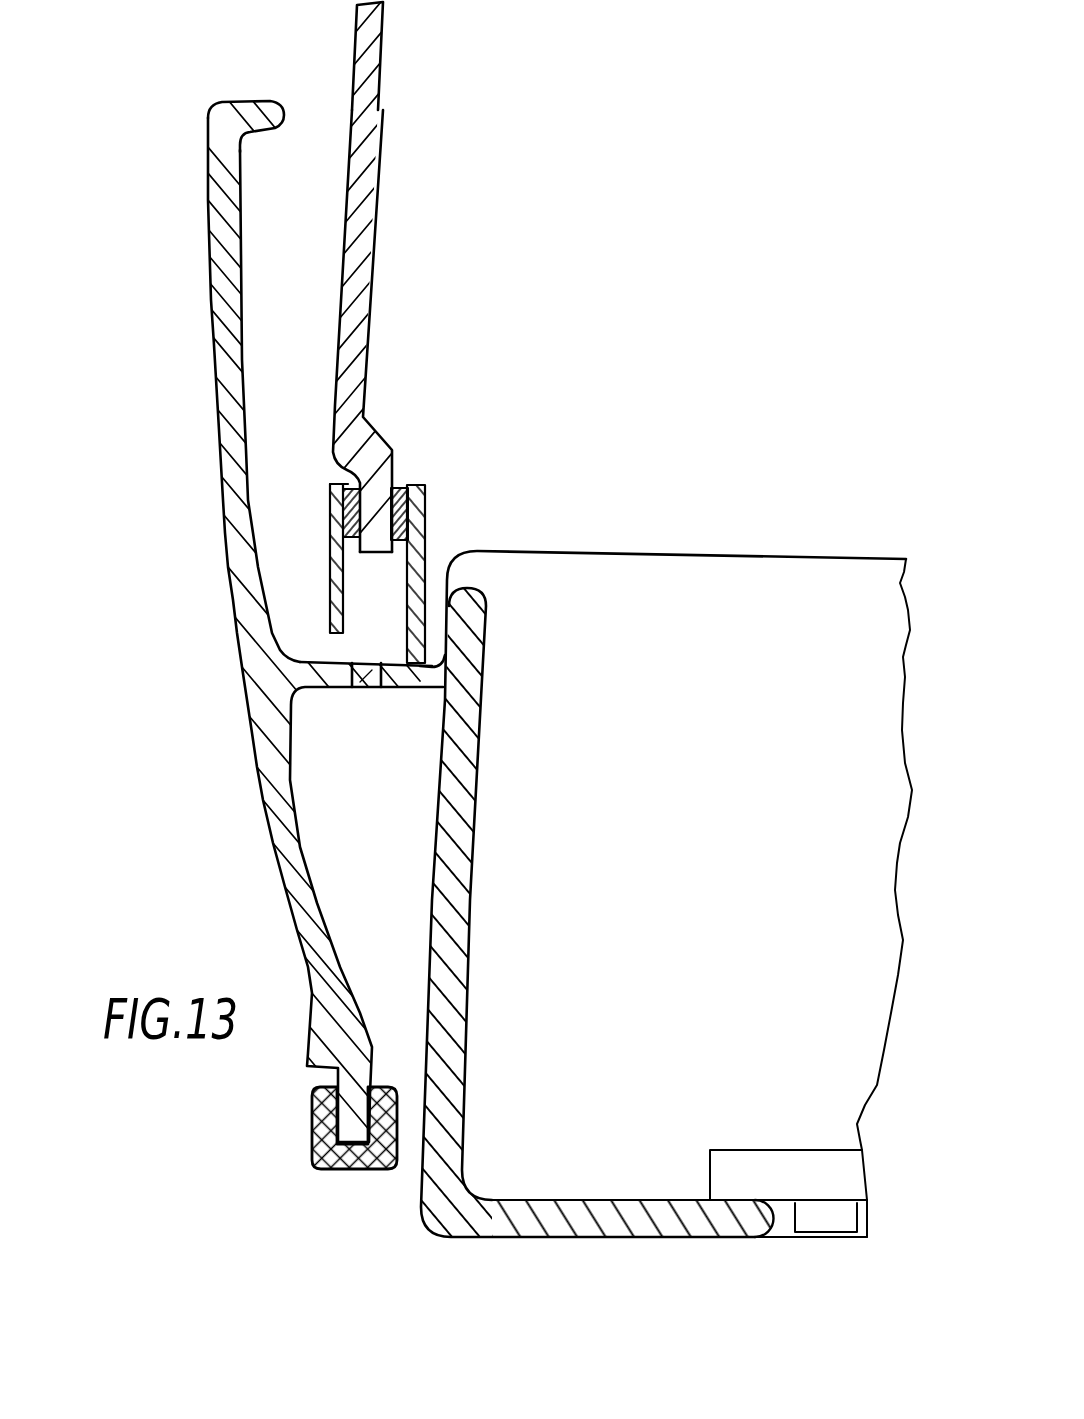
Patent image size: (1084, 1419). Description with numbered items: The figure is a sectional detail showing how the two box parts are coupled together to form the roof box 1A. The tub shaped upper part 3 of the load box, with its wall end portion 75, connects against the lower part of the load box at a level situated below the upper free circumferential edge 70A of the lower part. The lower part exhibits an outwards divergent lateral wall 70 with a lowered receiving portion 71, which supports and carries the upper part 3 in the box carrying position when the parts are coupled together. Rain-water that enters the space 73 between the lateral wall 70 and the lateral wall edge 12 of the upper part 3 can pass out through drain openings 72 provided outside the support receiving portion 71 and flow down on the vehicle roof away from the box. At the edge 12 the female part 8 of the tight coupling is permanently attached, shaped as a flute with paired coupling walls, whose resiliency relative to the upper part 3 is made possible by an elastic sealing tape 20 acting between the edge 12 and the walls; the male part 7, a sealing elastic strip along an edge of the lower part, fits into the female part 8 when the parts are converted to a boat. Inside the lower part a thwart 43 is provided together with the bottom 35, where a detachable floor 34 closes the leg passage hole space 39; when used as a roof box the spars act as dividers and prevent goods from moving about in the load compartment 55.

The roof box 1A is at (578, 160).
The upper part 3 is at (351, 267).
The male part 7 is at (317, 1155).
The female part 8 is at (435, 509).
The edge 12 is at (384, 93).
The elastic sealing tape 20 is at (396, 502).
The detachable floor 34 is at (845, 1180).
The bottom 35 is at (656, 1188).
The hole space 39 is at (785, 1225).
The thwart 43 is at (722, 805).
The load compartment 55 is at (767, 283).
The lateral wall 70 is at (206, 386).
The upper free circumferential edge 70A is at (257, 118).
The lowered receiving portion 71 is at (430, 650).
The drain openings 72 is at (368, 678).
The space 73 is at (272, 406).
The wall end portion 75 is at (374, 547).